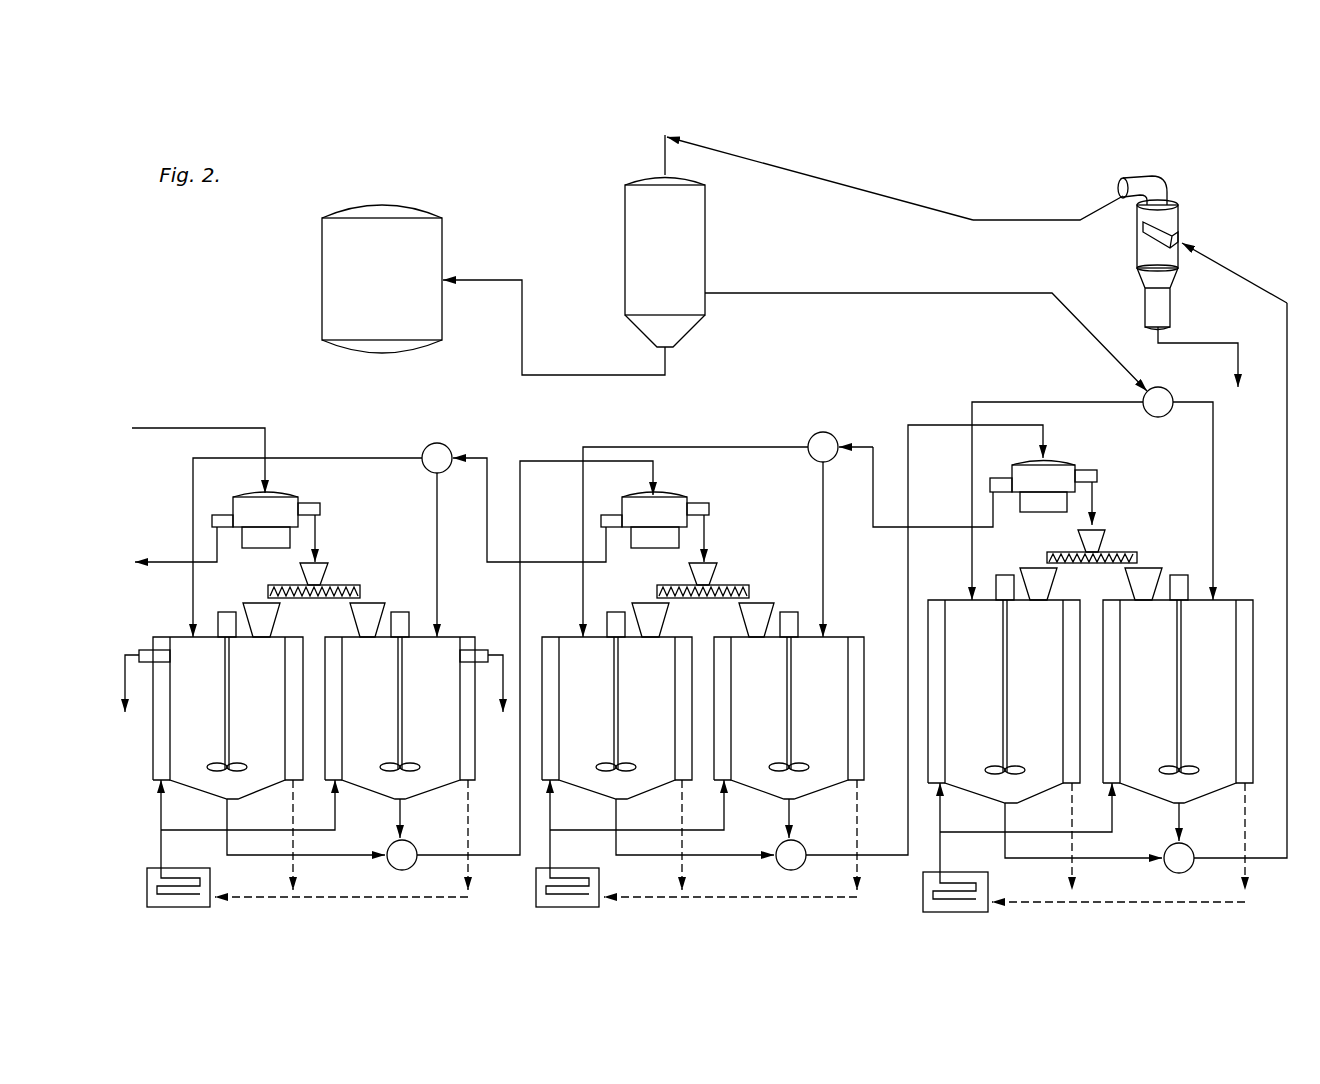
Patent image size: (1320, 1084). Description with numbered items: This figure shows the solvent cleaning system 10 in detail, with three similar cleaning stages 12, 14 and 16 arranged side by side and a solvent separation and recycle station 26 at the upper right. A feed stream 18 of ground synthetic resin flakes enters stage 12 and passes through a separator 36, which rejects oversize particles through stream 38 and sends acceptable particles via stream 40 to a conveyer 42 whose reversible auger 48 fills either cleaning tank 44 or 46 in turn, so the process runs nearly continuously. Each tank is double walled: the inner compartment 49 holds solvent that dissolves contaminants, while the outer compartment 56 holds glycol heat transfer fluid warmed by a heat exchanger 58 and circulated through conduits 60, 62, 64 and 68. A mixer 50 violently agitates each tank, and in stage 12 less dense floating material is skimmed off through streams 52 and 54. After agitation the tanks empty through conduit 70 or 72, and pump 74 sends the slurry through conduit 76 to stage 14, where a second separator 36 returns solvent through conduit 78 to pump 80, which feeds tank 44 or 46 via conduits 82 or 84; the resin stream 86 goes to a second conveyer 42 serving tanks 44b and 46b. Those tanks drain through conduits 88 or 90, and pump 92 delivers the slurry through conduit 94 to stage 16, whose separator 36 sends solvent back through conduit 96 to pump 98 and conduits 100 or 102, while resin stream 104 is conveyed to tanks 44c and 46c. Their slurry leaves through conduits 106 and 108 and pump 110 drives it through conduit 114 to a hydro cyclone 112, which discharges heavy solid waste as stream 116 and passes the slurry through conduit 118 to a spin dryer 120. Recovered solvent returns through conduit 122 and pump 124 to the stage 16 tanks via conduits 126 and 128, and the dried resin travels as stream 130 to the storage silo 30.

The solvent cleaning system 10 is at (345, 180).
The first cleaning stage 12 is at (338, 425).
The second cleaning stage 14 is at (723, 410).
The third cleaning stage 16 is at (1012, 380).
The feed stream 18 is at (185, 428).
The solvent separation and recycle station 26 is at (1095, 160).
The silo 30 is at (442, 240).
The separator 36 is at (290, 494).
The rejected particle stream 38 is at (174, 562).
The acceptable particle stream 40 is at (318, 532).
The conveyer 42 is at (347, 568).
The cleaning tank 44 is at (153, 720).
The cleaning tank 46 is at (477, 730).
The cleaning tank 44b is at (540, 640).
The cleaning tank 46b is at (866, 650).
The cleaning tank 44c is at (928, 620).
The cleaning tank 46c is at (1255, 620).
The reversible auger 48 is at (360, 592).
The inner compartment 49 is at (183, 640).
The mixer 50 is at (230, 718).
The skimming stream 52 is at (125, 660).
The skimming stream 54 is at (503, 648).
The outer compartment 56 is at (163, 758).
The heat exchanger 58 is at (147, 878).
The conduit 60 is at (161, 822).
The conduit 62 is at (337, 826).
The conduit 64 is at (470, 836).
The conduit 68 is at (295, 868).
The conduit 70 is at (270, 862).
The conduit 72 is at (408, 815).
The pump 74 is at (417, 868).
The conduit 76 is at (560, 461).
The conduit 78 is at (588, 563).
The pump 80 is at (448, 444).
The conduit 82 is at (193, 478).
The conduit 84 is at (437, 500).
The synthetic resin stream 86 is at (708, 532).
The conduit 88 is at (703, 858).
The conduit 90 is at (793, 830).
The pump 92 is at (802, 866).
The conduit 94 is at (945, 425).
The conduit 96 is at (960, 527).
The pump 98 is at (823, 432).
The conduit 100 is at (690, 447).
The conduit 102 is at (823, 590).
The synthetic resin stream 104 is at (1097, 493).
The conduit 106 is at (1100, 860).
The conduit 108 is at (1183, 815).
The pump 110 is at (1183, 866).
The hydro cyclone 112 is at (1178, 203).
The conduit 114 is at (1250, 280).
The waste stream 116 is at (1190, 343).
The conduit 118 is at (830, 178).
The spin dryer 120 is at (625, 197).
The conduit 122 is at (800, 293).
The pump 124 is at (1168, 392).
The conduit 126 is at (1107, 402).
The conduit 128 is at (1213, 490).
The dried particulate stream 130 is at (522, 372).